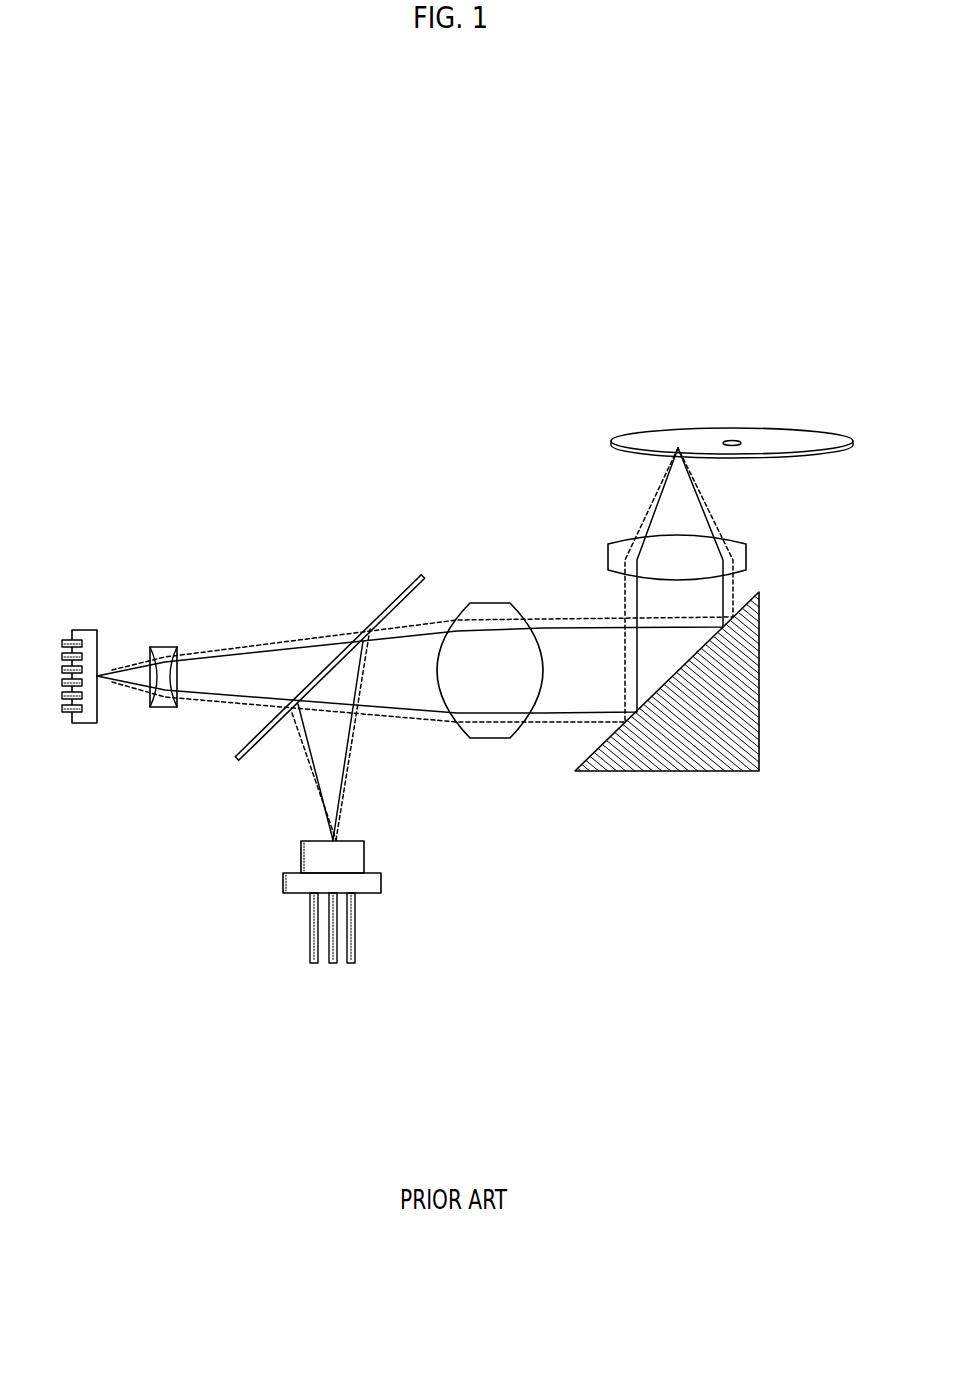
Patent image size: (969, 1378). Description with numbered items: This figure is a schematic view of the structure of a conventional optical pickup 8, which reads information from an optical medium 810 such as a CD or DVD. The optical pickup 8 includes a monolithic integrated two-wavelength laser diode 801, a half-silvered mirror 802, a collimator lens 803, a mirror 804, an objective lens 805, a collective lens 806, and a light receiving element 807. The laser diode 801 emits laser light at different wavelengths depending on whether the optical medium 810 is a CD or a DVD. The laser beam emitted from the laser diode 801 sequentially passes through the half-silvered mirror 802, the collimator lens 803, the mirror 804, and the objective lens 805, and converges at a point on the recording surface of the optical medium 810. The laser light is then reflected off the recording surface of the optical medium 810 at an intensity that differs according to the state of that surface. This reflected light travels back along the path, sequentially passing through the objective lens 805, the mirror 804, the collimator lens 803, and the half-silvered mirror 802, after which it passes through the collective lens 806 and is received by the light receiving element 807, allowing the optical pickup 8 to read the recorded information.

The optical pickup 8 is at (466, 363).
The monolithic integrated two-wavelength laser diode 801 is at (288, 895).
The half-silvered mirror 802 is at (388, 612).
The collimator lens 803 is at (488, 603).
The mirror 804 is at (757, 695).
The objective lens 805 is at (744, 560).
The collective lens 806 is at (165, 708).
The light receiving element 807 is at (97, 630).
The optical medium 810 is at (730, 423).